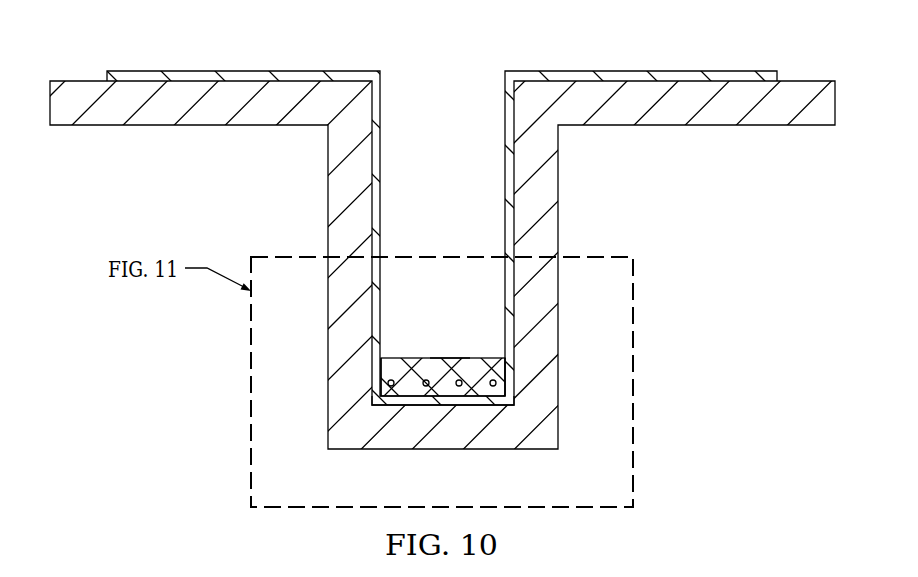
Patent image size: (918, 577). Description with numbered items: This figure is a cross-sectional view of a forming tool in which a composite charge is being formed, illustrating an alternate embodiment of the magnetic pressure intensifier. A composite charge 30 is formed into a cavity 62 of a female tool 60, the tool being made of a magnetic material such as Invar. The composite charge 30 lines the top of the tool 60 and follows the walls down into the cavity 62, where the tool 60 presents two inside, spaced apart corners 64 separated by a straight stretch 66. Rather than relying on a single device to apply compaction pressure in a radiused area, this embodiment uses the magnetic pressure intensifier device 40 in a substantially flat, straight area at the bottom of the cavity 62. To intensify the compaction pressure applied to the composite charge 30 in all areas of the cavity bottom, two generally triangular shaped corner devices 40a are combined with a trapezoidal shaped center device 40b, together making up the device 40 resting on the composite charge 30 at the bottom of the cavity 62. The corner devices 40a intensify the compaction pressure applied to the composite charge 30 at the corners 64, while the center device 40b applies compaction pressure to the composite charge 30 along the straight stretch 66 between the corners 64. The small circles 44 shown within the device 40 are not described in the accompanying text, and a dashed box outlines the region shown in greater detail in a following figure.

The composite charge 30 is at (198, 74).
The female tool 60 is at (213, 118).
The cavity 62 is at (425, 66).
The magnetic pressure intensifier device 40 is at (401, 350).
The corner devices 40a is at (378, 371).
The center device 40b is at (480, 366).
The holes 44 is at (426, 380).
The inside corners 64 is at (358, 418).
The straight stretch 66 is at (425, 418).